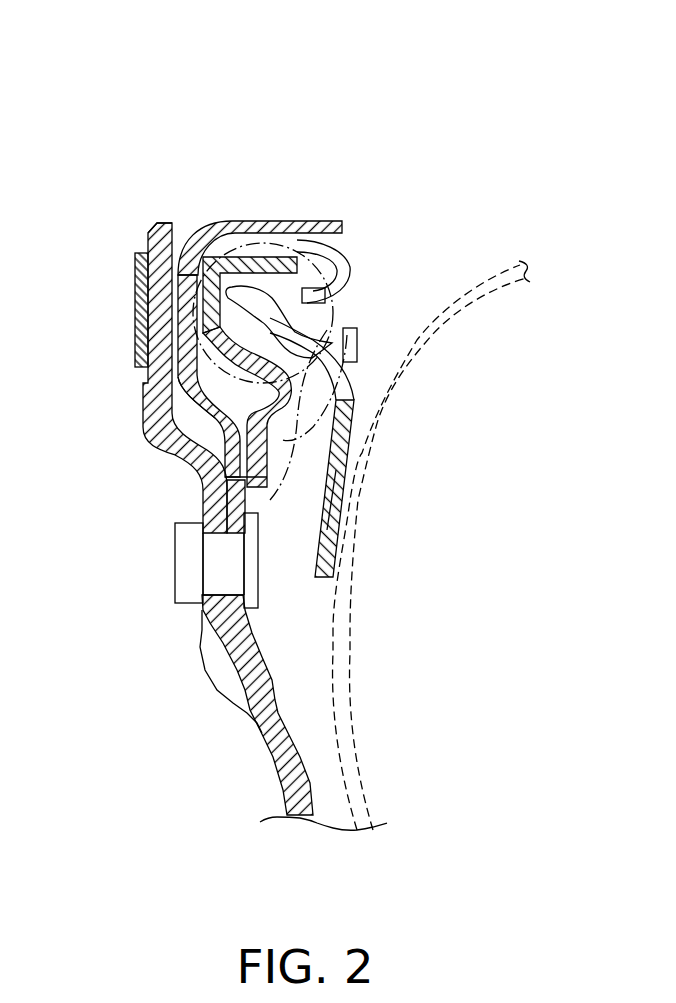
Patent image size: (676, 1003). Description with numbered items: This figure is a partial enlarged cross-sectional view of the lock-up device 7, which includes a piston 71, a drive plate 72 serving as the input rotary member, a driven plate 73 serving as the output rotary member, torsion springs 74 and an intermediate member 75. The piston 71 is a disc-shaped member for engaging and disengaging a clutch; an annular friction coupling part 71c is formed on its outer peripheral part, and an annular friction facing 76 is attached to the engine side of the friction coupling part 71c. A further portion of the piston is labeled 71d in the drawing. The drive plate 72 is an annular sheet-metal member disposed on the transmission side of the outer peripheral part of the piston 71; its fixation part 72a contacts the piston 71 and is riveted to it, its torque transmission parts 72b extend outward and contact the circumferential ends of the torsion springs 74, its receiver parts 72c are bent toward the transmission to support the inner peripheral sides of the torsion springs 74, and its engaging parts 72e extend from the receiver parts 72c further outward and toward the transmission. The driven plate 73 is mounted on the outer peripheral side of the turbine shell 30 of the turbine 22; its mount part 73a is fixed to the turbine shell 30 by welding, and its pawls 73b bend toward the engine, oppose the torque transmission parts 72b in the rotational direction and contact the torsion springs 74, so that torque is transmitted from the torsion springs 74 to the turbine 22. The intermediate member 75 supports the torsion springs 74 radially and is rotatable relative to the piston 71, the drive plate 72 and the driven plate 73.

The lock-up device 7 is at (117, 85).
The turbine 22 is at (485, 258).
The turbine shell 30 is at (480, 290).
The piston 71 is at (108, 353).
The friction coupling part 71c is at (160, 222).
The holding portion 71d is at (187, 555).
The drive plate 72 is at (273, 493).
The fixation part 72a is at (247, 513).
The torque transmission part 72b is at (178, 253).
The receiver part 72c is at (230, 500).
The engaging part 72e is at (367, 407).
The driven plate 73 is at (360, 443).
The mount part 73a is at (340, 470).
The pawl 73b is at (345, 346).
The torsion spring 74 is at (345, 311).
The intermediate member 75 is at (263, 157).
The friction facing 76 is at (143, 273).